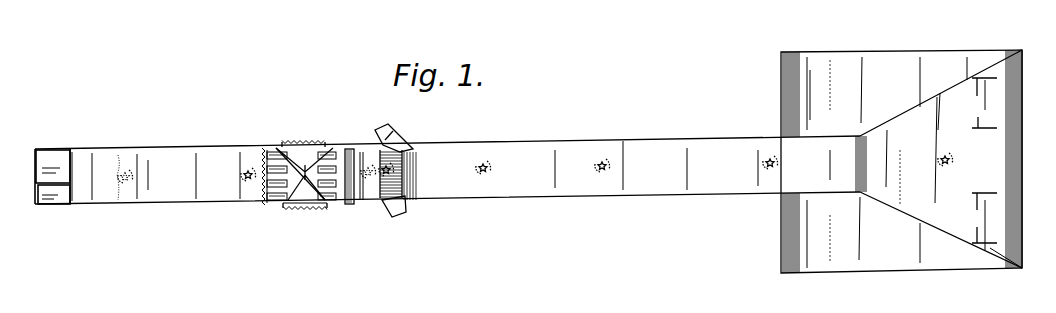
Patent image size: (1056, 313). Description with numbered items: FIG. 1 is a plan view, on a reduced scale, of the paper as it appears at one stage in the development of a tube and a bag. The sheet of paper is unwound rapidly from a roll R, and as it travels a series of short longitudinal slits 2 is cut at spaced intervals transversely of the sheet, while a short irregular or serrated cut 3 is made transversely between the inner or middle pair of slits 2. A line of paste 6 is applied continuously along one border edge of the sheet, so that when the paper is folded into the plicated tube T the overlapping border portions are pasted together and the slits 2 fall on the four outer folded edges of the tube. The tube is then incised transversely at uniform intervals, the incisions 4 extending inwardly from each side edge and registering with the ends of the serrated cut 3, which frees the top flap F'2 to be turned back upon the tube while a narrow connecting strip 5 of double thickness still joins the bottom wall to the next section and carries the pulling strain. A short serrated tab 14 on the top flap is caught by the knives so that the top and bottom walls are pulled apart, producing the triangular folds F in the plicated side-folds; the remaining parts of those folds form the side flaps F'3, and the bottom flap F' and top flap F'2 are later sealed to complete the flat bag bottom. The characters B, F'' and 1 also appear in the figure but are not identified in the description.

The end block of handle B is at (82, 155).
The plicated tube T is at (618, 145).
The triangular folds F is at (299, 155).
The bottom flap F' is at (311, 194).
The clamp side plate F'' is at (260, 156).
The top flap F'2 is at (396, 156).
The side flaps F'3 is at (301, 222).
The incisions 4 is at (384, 205).
The connecting strip 5 is at (361, 172).
The serrated tab 14 is at (402, 182).
The roll R is at (788, 241).
The head block face 1 is at (1024, 158).
The slits 2 is at (982, 160).
The serrated cut 3 is at (772, 176).
The line of paste 6 is at (1022, 262).